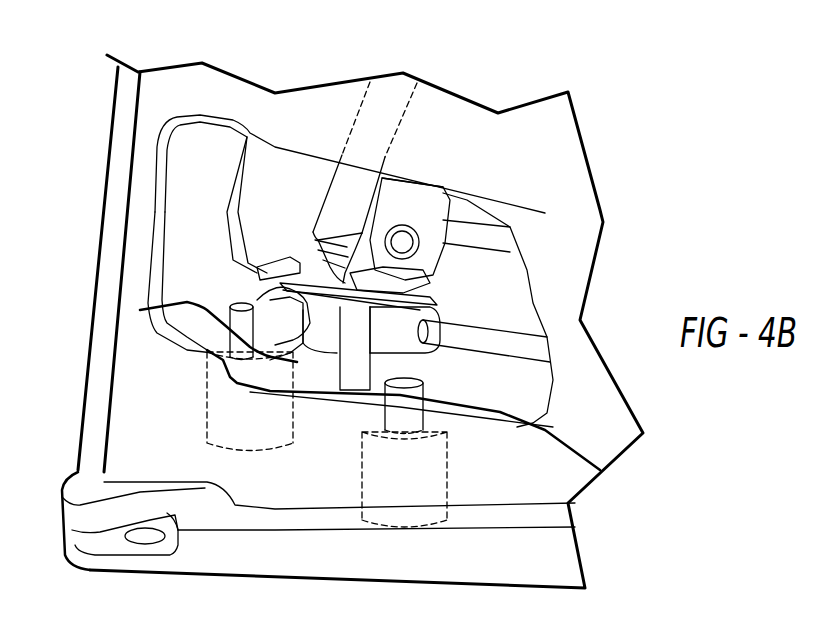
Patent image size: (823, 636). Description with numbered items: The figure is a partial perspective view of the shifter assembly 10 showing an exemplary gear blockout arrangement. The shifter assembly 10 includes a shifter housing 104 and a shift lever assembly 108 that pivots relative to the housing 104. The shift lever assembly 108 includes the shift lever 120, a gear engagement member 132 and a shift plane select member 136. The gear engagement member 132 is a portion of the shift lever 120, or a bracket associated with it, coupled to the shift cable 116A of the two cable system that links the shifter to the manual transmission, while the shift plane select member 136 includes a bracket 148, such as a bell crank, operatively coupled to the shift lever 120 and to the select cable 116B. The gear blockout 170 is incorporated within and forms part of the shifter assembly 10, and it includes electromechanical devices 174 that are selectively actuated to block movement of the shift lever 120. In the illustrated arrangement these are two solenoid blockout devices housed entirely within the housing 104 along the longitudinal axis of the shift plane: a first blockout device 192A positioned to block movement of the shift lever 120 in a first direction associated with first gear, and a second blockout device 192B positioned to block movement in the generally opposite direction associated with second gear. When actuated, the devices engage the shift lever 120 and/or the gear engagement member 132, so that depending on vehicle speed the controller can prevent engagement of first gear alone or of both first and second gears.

The shifter assembly 10 is at (618, 84).
The shifter housing 104 is at (540, 148).
The shift lever assembly 108 is at (324, 197).
The shift cable 116A is at (527, 347).
The select cable 116B is at (493, 243).
The shift lever 120 is at (333, 177).
The gear engagement member 132 is at (320, 362).
The shift plane select member 136 is at (420, 182).
The bracket 148 is at (423, 210).
The gear blockout 170 is at (254, 480).
The electromechanical devices 174 is at (208, 407).
The first blockout device 192A is at (140, 310).
The second blockout device 192B is at (444, 459).